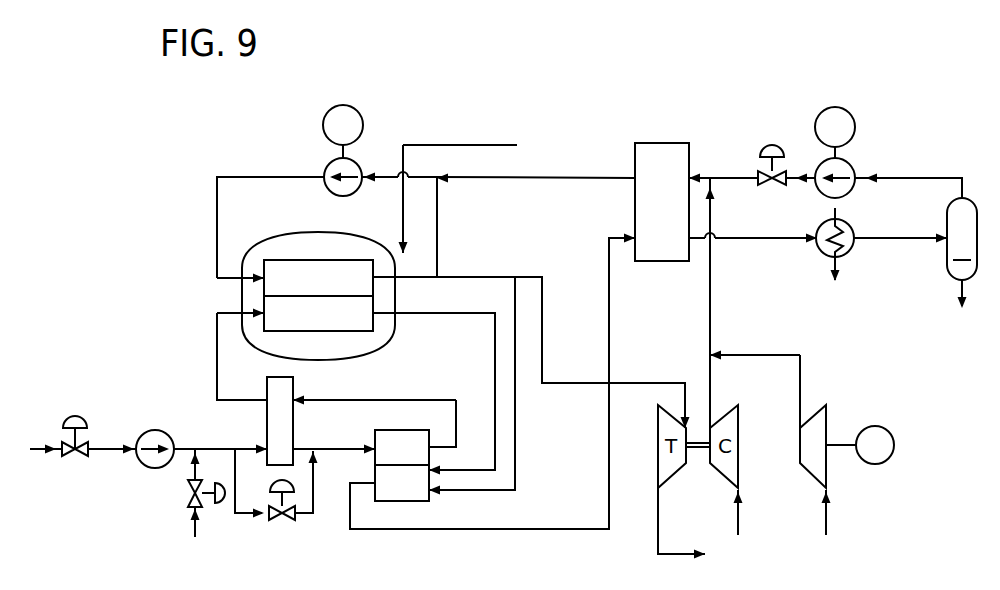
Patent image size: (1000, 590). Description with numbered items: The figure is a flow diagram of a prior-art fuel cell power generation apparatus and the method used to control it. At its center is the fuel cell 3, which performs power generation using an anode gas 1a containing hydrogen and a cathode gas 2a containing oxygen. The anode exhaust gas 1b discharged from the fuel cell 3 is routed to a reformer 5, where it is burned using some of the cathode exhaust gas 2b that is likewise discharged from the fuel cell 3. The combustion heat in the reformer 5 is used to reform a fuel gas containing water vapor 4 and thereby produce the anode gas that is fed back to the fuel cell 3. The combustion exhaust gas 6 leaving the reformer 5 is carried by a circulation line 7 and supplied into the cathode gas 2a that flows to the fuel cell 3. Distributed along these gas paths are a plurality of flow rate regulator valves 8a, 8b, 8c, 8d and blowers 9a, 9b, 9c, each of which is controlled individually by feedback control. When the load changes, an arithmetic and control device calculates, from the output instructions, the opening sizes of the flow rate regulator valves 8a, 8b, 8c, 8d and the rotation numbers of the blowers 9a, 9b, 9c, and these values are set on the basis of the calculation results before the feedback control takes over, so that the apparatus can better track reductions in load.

The anode gas 1a is at (217, 352).
The anode exhaust gas 1b is at (442, 314).
The cathode gas 2a is at (217, 232).
The cathode exhaust gas 2b is at (486, 277).
The fuel cell 3 is at (306, 254).
The fuel gas containing water vapor 4 is at (192, 527).
The reformer 5 is at (395, 506).
The combustion exhaust gas 6 is at (525, 528).
The circulation line 7 is at (924, 173).
The flow rate regulator valve 8a is at (75, 414).
The flow rate regulator valve 8b is at (186, 495).
The flow rate regulator valve 8c is at (282, 523).
The flow rate regulator valve 8d is at (772, 146).
The blower 9a is at (835, 106).
The blower 9b is at (345, 104).
The blower 9c is at (878, 427).